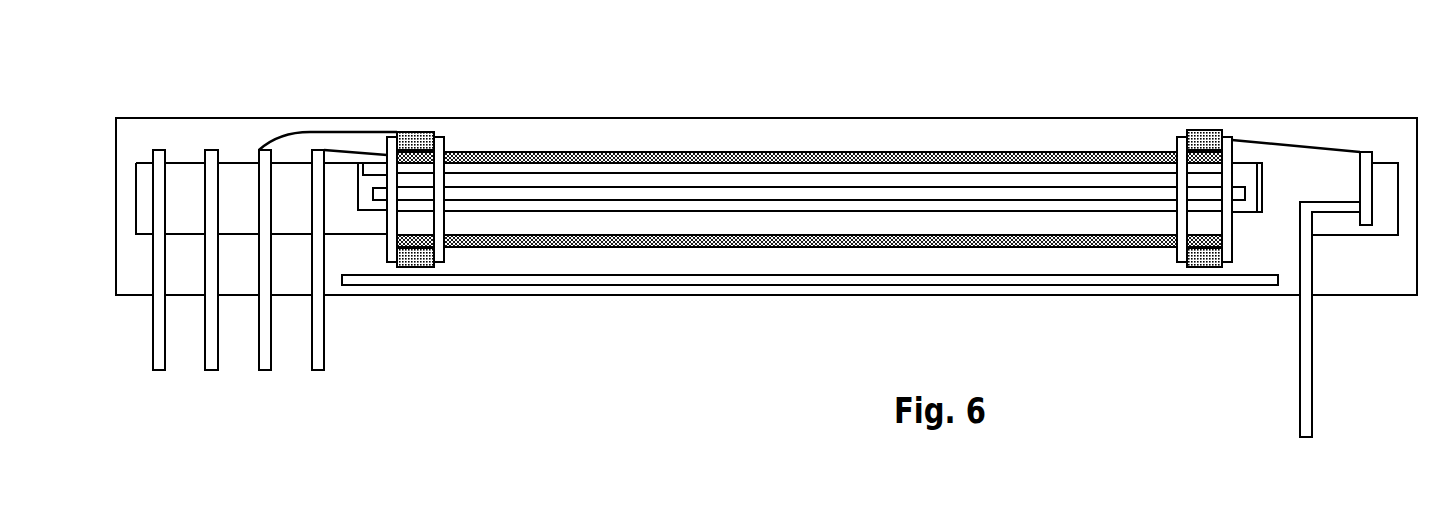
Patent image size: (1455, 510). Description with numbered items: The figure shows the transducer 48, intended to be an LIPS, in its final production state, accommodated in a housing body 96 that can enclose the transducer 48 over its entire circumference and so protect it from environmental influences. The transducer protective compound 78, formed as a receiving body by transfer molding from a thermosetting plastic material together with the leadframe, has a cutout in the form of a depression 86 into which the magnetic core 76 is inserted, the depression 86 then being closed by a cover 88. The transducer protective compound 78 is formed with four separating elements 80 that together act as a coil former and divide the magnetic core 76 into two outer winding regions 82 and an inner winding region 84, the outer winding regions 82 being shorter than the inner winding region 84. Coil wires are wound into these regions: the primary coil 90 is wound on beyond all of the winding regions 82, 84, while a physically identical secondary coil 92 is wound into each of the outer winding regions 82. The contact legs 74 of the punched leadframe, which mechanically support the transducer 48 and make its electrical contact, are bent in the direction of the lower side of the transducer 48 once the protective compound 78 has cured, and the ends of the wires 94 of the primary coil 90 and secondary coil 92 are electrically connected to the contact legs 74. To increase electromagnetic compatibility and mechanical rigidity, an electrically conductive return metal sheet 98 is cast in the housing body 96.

The transducer 48 is at (1342, 332).
The contact legs 74 is at (210, 150).
The magnetic core 76 is at (905, 195).
The transducer protective compound 78 is at (1390, 165).
The separating elements 80 is at (389, 262).
The outer winding regions 82 is at (415, 300).
The inner winding region 84 is at (700, 315).
The depression 86 is at (800, 180).
The cover 88 is at (703, 170).
The primary coil 90 is at (593, 160).
The secondary coil 92 is at (413, 140).
The wire ends 94 is at (380, 130).
The housing body 96 is at (130, 143).
The return metal sheet 98 is at (577, 285).